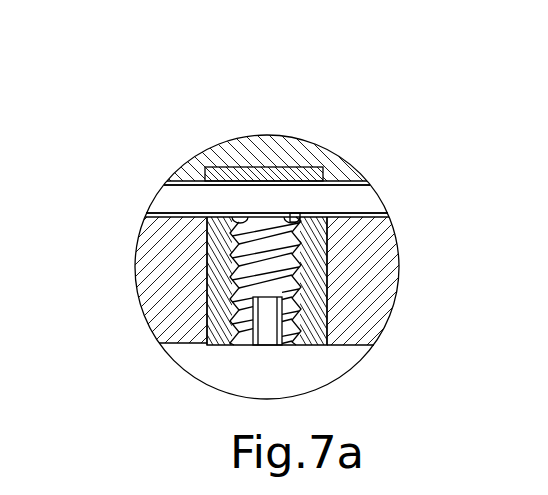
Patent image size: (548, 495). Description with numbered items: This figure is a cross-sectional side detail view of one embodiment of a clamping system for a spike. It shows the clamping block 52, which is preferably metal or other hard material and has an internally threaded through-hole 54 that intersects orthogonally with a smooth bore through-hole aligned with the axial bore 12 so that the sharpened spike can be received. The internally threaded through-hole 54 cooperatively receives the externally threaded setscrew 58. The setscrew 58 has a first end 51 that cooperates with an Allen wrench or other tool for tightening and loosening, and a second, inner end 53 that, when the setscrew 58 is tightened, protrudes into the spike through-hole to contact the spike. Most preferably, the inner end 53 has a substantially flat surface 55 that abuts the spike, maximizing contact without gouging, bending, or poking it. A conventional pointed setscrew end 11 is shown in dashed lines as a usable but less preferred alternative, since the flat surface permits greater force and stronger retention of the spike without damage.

The setscrew point 11 is at (279, 205).
The axial bore 12 is at (190, 198).
The first end 51 is at (290, 346).
The clamping block 52 is at (209, 272).
The inner end 53 is at (302, 213).
The internally threaded through-hole 54 is at (392, 249).
The flat surface 55 is at (262, 207).
The setscrew 58 is at (243, 283).